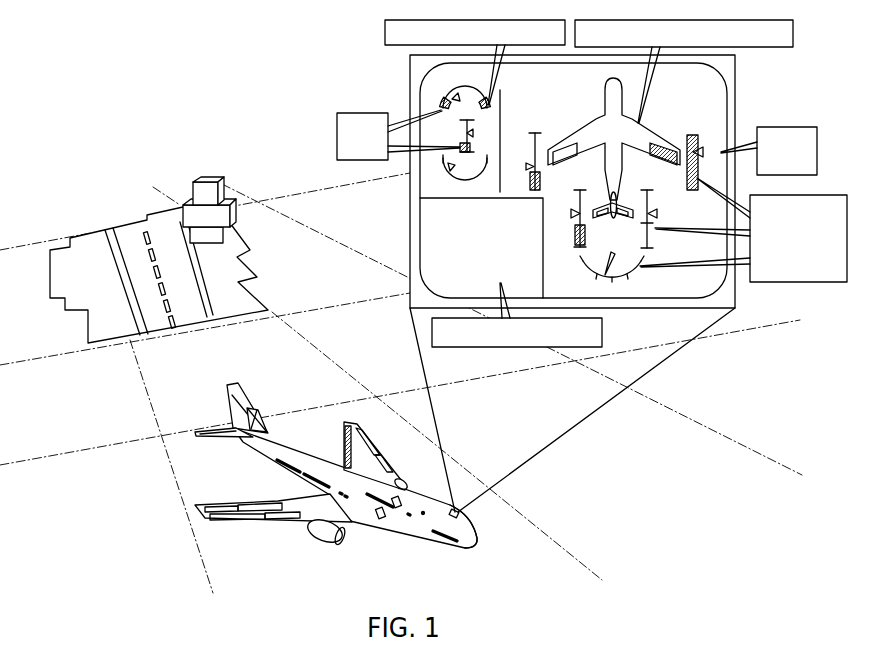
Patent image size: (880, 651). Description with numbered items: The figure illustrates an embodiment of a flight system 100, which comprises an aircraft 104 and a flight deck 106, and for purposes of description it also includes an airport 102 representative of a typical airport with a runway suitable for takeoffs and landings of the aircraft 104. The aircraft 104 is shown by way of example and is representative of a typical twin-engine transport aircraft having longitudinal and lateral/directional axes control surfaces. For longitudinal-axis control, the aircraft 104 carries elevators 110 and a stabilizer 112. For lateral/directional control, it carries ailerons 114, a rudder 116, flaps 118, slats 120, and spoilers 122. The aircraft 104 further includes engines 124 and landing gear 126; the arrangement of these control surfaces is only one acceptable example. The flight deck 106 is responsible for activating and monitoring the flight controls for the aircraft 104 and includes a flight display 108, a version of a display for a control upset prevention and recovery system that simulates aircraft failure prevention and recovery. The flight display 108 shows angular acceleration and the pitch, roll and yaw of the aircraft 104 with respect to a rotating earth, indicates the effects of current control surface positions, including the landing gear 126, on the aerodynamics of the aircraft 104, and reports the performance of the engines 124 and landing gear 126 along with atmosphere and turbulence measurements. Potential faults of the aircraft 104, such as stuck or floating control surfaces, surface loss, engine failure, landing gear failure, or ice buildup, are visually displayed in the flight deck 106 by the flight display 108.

The flight system 100 is at (423, 306).
The airport 102 is at (62, 253).
The aircraft 104 is at (456, 446).
The flight deck 106 is at (458, 513).
The flight display 108 is at (410, 92).
The elevators 110 is at (248, 412).
The stabilizer 112 is at (263, 410).
The ailerons 114 is at (220, 504).
The rudder 116 is at (227, 390).
The flaps 118 is at (257, 504).
The slats 120 is at (373, 450).
The spoilers 122 is at (363, 433).
The engines 124 is at (364, 508).
The landing gear 126 is at (437, 548).